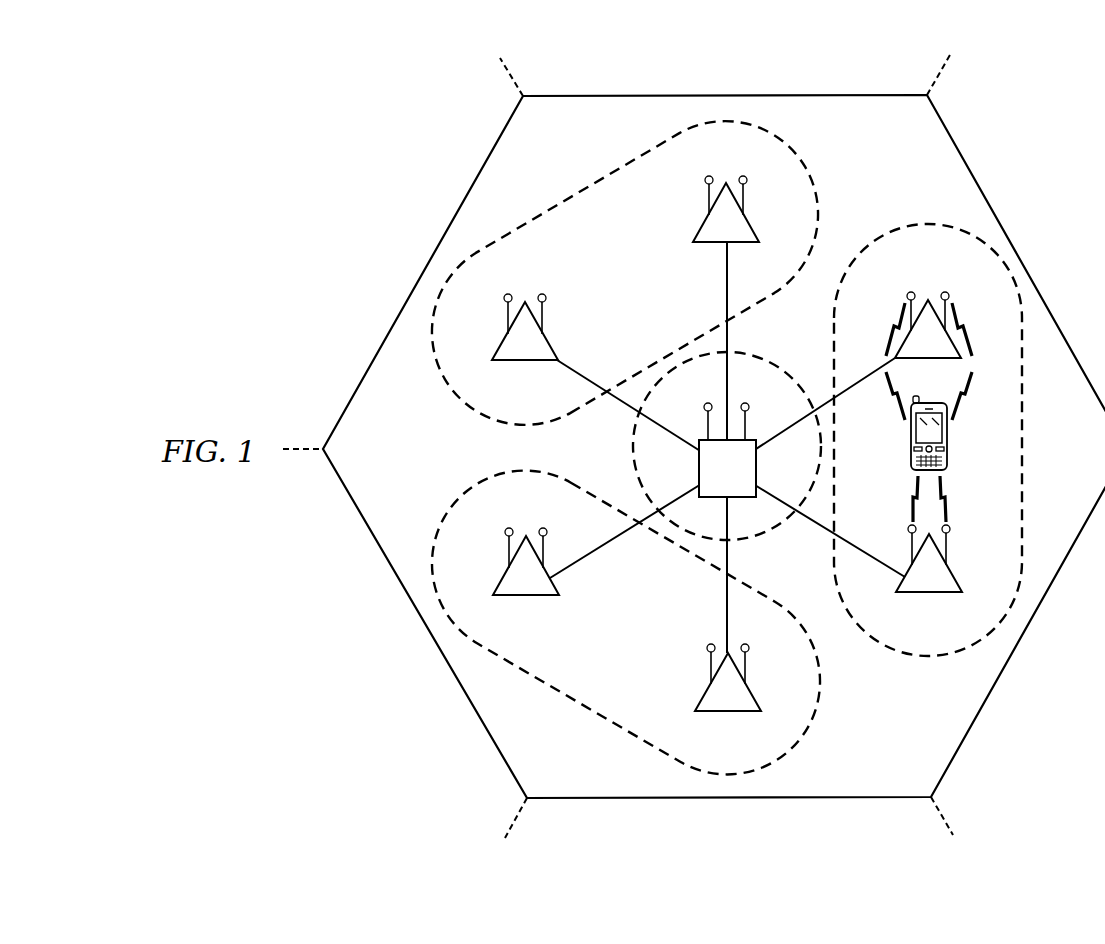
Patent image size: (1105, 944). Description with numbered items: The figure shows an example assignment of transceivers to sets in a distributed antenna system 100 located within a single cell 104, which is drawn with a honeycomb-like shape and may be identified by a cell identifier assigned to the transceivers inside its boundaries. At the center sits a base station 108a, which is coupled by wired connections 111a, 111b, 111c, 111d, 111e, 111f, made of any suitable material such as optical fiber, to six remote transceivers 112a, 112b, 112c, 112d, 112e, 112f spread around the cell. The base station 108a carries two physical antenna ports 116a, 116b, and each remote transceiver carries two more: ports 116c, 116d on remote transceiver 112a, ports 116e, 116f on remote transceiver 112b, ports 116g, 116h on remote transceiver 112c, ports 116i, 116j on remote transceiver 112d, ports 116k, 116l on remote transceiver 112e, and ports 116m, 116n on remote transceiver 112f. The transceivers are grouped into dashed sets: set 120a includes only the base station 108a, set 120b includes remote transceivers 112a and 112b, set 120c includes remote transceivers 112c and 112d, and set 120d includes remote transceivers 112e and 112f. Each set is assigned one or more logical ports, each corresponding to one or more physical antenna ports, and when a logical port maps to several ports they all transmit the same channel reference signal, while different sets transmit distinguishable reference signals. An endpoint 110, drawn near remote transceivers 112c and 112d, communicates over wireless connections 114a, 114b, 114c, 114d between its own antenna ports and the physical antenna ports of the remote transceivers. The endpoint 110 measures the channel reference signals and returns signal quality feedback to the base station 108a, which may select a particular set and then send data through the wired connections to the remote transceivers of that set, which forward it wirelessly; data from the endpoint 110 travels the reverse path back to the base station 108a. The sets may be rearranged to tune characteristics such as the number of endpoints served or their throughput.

The distributed antenna system 100 is at (886, 144).
The cell 104 is at (714, 445).
The base station 108a is at (667, 468).
The endpoint 110 is at (957, 433).
The wired connection 111a is at (642, 414).
The wired connection 111b is at (761, 341).
The wired connection 111c is at (811, 413).
The wired connection 111d is at (816, 535).
The wired connection 111e is at (761, 575).
The wired connection 111f is at (638, 538).
The remote transceiver 112a is at (525, 357).
The remote transceiver 112b is at (717, 235).
The remote transceiver 112c is at (928, 269).
The remote transceiver 112d is at (929, 588).
The remote transceiver 112e is at (728, 708).
The remote transceiver 112f is at (526, 591).
The wireless connection 114a is at (877, 368).
The wireless connection 114b is at (982, 362).
The wireless connection 114c is at (881, 491).
The wireless connection 114d is at (977, 499).
The physical antenna port 116a is at (668, 383).
The physical antenna port 116b is at (764, 381).
The physical antenna port 116c is at (478, 316).
The physical antenna port 116d is at (561, 294).
The physical antenna port 116e is at (680, 197).
The physical antenna port 116f is at (725, 176).
The physical antenna port 116g is at (899, 290).
The physical antenna port 116h is at (961, 290).
The physical antenna port 116i is at (881, 534).
The physical antenna port 116j is at (975, 545).
The physical antenna port 116k is at (693, 643).
The physical antenna port 116l is at (773, 664).
The physical antenna port 116m is at (477, 549).
The physical antenna port 116n is at (523, 527).
The set 120a is at (727, 461).
The set 120b is at (625, 273).
The set 120c is at (963, 440).
The set 120d is at (626, 623).